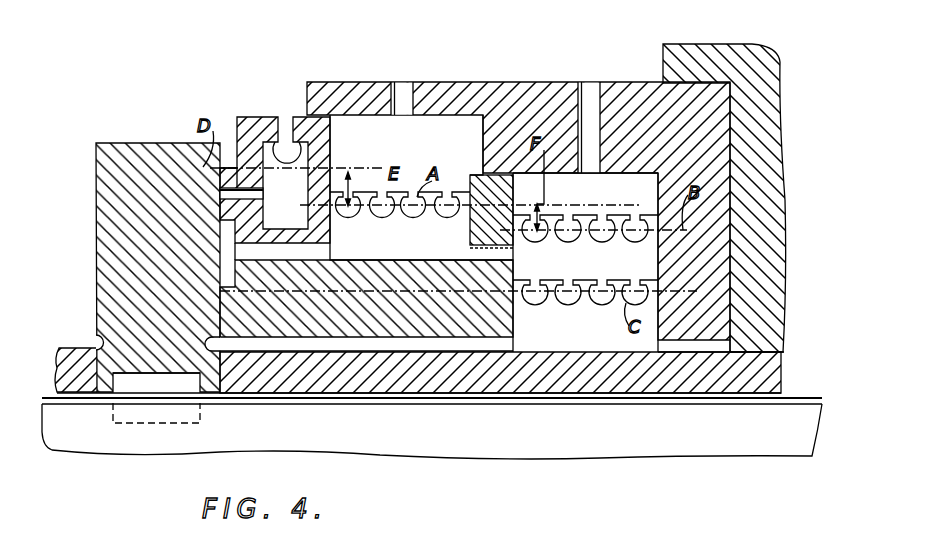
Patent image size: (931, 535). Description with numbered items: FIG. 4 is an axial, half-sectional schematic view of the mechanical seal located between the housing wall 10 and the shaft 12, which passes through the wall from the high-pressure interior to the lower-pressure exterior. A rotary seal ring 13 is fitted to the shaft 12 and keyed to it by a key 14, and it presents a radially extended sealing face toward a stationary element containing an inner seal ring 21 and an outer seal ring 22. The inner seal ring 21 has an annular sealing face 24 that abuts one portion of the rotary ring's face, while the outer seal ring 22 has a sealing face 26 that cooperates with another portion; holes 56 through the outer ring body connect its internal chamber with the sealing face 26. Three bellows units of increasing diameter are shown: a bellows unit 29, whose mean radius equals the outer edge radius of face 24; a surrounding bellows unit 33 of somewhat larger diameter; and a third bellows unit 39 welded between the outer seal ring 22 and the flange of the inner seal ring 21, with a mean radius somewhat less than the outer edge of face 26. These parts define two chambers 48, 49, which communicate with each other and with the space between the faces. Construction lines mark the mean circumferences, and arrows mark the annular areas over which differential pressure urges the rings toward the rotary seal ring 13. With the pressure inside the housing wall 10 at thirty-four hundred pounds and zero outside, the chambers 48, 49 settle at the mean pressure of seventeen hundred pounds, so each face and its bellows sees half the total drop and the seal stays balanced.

The housing wall 10 is at (746, 55).
The shaft 12 is at (739, 441).
The rotary seal ring 13 is at (112, 237).
The key 14 is at (121, 386).
The inner seal ring 21 is at (452, 329).
The outer seal ring 22 is at (331, 131).
The sealing face 24 is at (218, 307).
The sealing face 26 is at (220, 183).
The bellows unit 29 is at (648, 281).
The bellows unit 33 is at (653, 216).
The third bellows unit 39 is at (457, 193).
The chamber 48 is at (421, 188).
The chamber 49 is at (585, 262).
The holes 56 is at (222, 200).